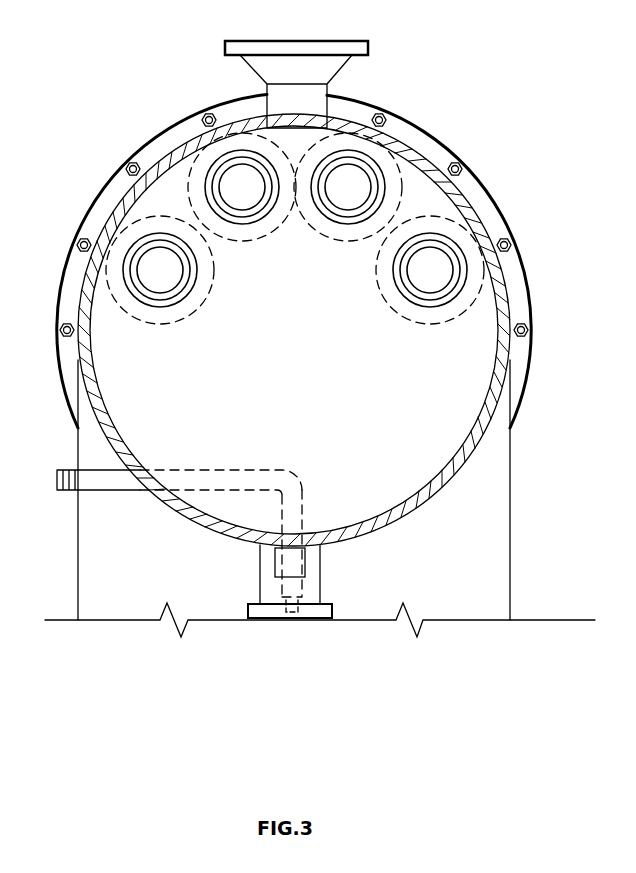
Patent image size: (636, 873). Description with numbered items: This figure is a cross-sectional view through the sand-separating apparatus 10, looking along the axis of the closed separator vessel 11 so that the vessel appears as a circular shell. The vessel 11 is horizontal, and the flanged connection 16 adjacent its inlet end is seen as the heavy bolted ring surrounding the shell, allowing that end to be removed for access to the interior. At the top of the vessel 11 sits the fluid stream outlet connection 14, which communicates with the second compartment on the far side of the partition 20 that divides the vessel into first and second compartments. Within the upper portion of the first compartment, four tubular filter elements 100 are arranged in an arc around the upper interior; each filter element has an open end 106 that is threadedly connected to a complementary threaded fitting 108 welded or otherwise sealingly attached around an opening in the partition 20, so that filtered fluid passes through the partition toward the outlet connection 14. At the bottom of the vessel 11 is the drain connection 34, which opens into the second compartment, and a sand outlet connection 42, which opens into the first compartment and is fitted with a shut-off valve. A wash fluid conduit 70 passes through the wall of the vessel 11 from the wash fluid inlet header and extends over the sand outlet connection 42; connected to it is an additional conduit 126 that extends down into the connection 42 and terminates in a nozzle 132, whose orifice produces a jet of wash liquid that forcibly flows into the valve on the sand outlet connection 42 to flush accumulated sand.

The apparatus for separating and removing sand from a fluid stream 10 is at (458, 131).
The separator vessel 11 is at (480, 212).
The fluid stream outlet connection 14 is at (333, 73).
The flanged connection 16 is at (103, 190).
The partition 20 is at (295, 381).
The drain connection 34 is at (305, 562).
The sand outlet connection 42 is at (259, 570).
The conduit 70 is at (58, 482).
The tubular filter element 100 is at (226, 242).
The open end 106 is at (266, 214).
The threaded fitting 108 is at (246, 222).
The conduit 126 is at (303, 590).
The nozzle 132 is at (292, 620).